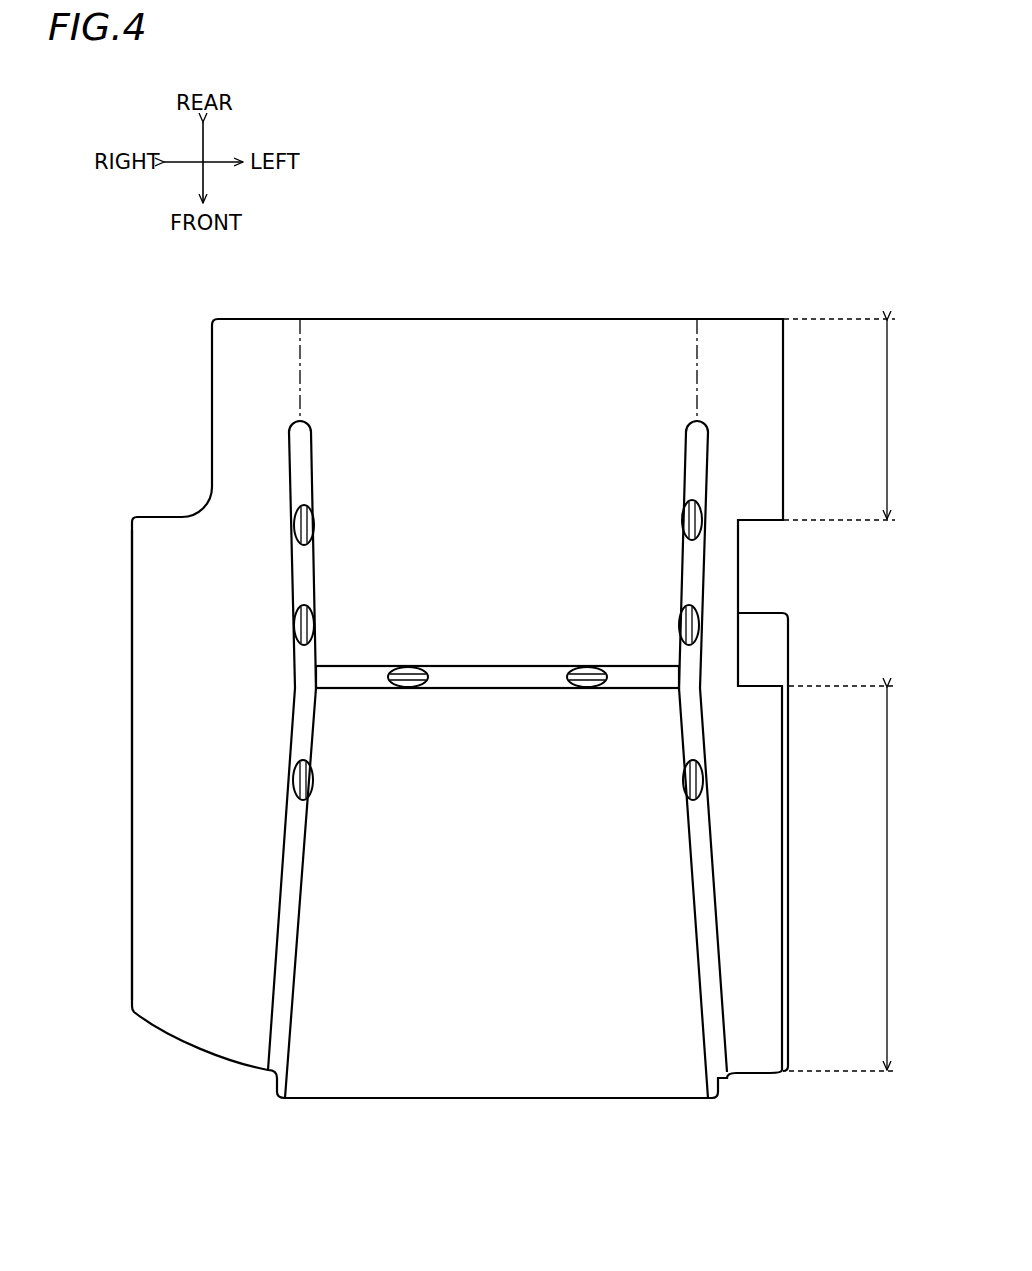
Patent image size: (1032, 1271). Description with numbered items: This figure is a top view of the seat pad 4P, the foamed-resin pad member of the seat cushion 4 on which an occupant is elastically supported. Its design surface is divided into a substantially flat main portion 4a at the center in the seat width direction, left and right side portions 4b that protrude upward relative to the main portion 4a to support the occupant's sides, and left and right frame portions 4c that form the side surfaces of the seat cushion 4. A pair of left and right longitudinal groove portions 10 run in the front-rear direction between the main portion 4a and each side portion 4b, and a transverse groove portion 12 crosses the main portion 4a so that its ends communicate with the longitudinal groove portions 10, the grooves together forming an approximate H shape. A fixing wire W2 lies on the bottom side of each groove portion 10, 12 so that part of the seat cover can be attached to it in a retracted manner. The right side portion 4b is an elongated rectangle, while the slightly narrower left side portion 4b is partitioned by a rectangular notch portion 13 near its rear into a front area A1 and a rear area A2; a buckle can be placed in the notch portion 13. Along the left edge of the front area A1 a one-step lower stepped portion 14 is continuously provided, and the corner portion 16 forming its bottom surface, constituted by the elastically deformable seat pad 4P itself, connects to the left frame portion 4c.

The seat pad 4P is at (457, 652).
The seat cushion 4 is at (595, 290).
The main portion 4a is at (416, 895).
The side portion 4b is at (450, 795).
The frame portion 4c is at (130, 741).
The longitudinal groove portion 10 is at (304, 826).
The transverse groove portion 12 is at (500, 678).
The notch portion 13 is at (739, 572).
The stepped portion 14 is at (783, 822).
The corner portion 16 is at (790, 775).
The fixing wire W2 is at (318, 626).
The front area A1 is at (887, 878).
The rear area A2 is at (886, 419).